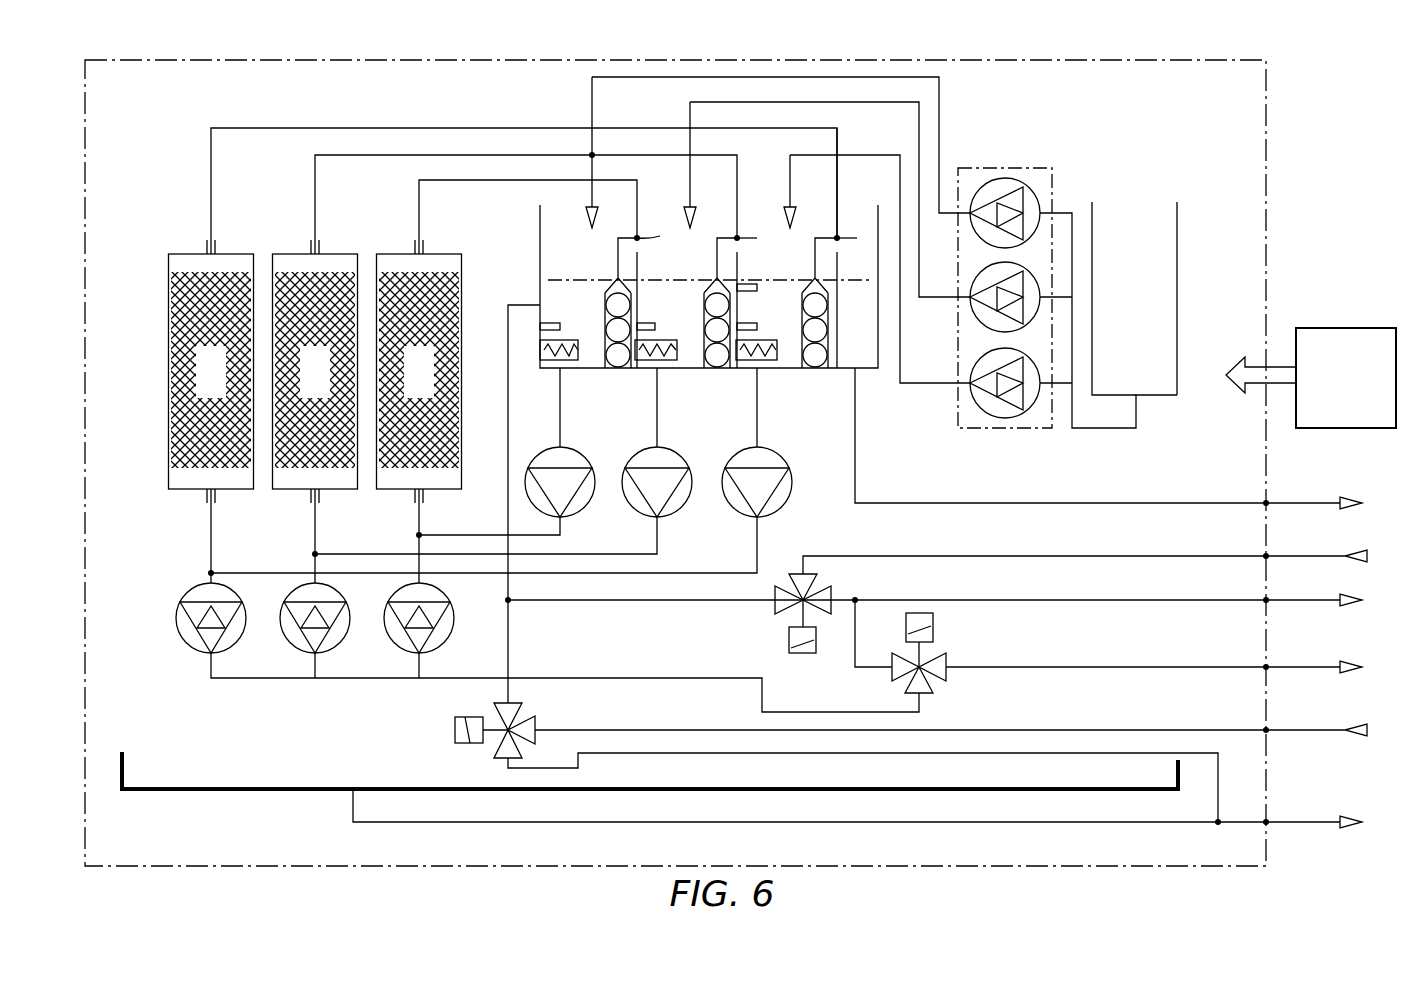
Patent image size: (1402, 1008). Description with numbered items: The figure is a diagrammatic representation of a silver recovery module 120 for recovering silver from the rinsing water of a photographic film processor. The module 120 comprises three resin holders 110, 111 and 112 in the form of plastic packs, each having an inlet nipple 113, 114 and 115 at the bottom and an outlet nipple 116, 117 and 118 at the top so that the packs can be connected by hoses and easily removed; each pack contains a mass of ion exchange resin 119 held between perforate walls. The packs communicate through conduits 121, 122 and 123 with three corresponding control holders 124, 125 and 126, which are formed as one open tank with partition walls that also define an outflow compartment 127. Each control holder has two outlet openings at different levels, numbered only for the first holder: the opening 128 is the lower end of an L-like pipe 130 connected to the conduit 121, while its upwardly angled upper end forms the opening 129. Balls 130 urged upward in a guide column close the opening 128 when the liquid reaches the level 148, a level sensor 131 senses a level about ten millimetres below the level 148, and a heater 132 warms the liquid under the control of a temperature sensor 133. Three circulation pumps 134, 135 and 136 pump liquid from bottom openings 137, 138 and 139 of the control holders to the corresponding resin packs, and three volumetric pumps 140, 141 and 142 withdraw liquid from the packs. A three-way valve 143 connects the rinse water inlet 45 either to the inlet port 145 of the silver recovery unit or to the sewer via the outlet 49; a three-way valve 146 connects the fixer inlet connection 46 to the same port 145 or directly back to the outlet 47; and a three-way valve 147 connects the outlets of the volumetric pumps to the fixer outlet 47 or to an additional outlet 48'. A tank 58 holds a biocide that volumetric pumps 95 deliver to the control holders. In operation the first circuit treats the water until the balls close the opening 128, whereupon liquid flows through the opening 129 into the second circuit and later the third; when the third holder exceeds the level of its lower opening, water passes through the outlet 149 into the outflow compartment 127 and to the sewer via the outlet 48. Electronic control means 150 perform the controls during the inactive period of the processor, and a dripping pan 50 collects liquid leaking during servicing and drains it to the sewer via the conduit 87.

The resin holder 110 is at (388, 262).
The resin holder 111 is at (285, 262).
The resin holder 112 is at (181, 335).
The inlet nipple 113 is at (426, 495).
The inlet nipple 114 is at (322, 495).
The inlet nipple 115 is at (218, 495).
The outlet nipple 116 is at (424, 248).
The outlet nipple 117 is at (320, 248).
The outlet nipple 118 is at (216, 248).
The ion exchange resin 119 is at (170, 357).
The silver recovery module 120 is at (1268, 133).
The conduit 121 is at (485, 180).
The conduit 122 is at (387, 155).
The conduit 123 is at (286, 128).
The control holder 124 is at (566, 271).
The control holder 125 is at (664, 271).
The control holder 126 is at (763, 271).
The outflow compartment 127 is at (841, 303).
The outlet opening 128 is at (560, 278).
The outlet opening 129 is at (660, 237).
The L-like pipe with balls 130 is at (635, 238).
The level sensor 131 is at (746, 284).
The heater 132 is at (540, 350).
The temperature sensor 133 is at (540, 327).
The circulation pump 134 is at (576, 458).
The circulation pump 135 is at (673, 458).
The circulation pump 136 is at (774, 458).
The bottom opening 137 is at (556, 370).
The bottom opening 138 is at (656, 370).
The bottom opening 139 is at (746, 370).
The volumetric pump 140 is at (444, 594).
The volumetric pump 141 is at (334, 594).
The volumetric pump 142 is at (230, 594).
The three-way valve 143 is at (455, 730).
The inlet port 145 is at (538, 303).
The three-way valve 146 is at (812, 587).
The three-way valve 147 is at (933, 634).
The level 148 is at (798, 278).
The outlet 149 is at (857, 238).
The electronic control means 150 is at (1323, 328).
The volumetric pumps 95 is at (1028, 205).
The biocide tank 58 is at (1177, 240).
The outlet 48 is at (1112, 438).
The inlet connection 46 is at (1360, 553).
The fixer outlet 47 is at (1352, 596).
The additional outlet 48' is at (1165, 650).
The rinse water inlet 45 is at (1360, 727).
The outlet 49 is at (1348, 820).
The dripping pan 50 is at (224, 792).
The conduit 87 is at (583, 823).